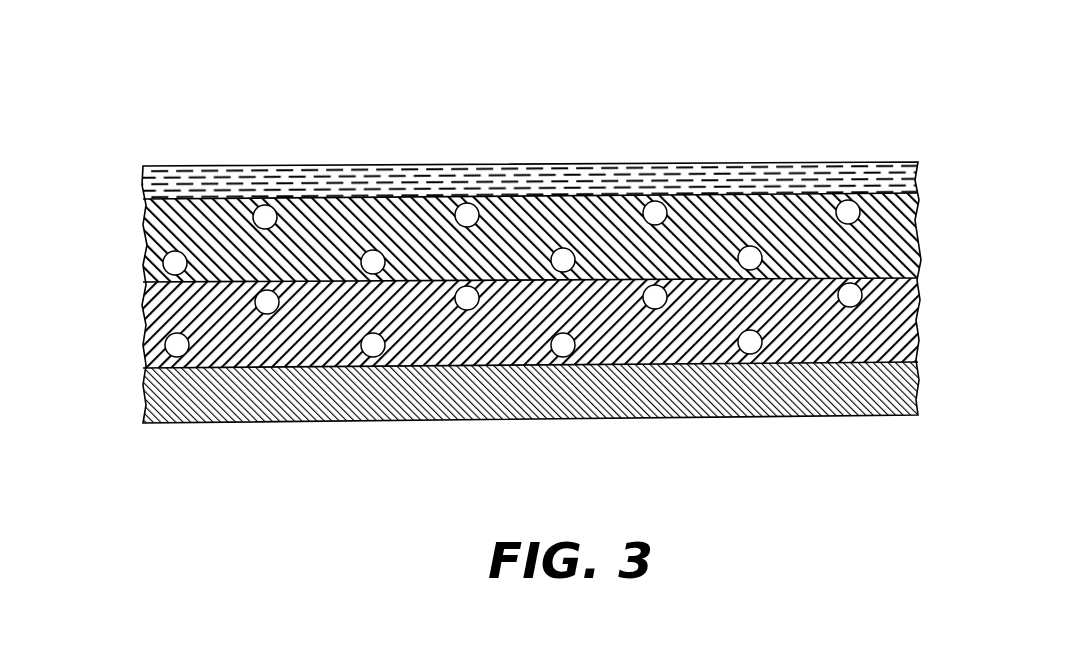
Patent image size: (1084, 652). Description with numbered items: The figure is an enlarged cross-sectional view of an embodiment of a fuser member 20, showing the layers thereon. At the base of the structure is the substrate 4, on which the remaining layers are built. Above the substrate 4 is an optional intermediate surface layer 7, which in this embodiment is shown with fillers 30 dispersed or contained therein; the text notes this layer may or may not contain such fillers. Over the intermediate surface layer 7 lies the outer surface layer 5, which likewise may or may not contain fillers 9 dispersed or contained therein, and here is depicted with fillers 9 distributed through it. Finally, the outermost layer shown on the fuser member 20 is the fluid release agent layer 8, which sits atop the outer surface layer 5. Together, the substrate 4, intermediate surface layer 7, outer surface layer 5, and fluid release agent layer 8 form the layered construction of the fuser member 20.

The fuser member 20 is at (745, 71).
The fluid release agent layer 8 is at (918, 178).
The outer surface layer 5 is at (145, 216).
The fillers 9 is at (850, 210).
The intermediate surface layer 7 is at (178, 313).
The fillers 30 is at (175, 358).
The substrate 4 is at (917, 393).